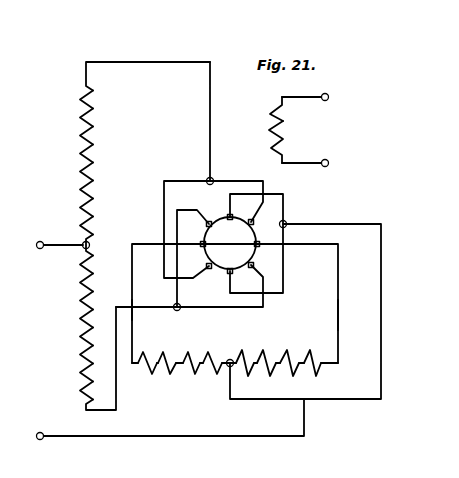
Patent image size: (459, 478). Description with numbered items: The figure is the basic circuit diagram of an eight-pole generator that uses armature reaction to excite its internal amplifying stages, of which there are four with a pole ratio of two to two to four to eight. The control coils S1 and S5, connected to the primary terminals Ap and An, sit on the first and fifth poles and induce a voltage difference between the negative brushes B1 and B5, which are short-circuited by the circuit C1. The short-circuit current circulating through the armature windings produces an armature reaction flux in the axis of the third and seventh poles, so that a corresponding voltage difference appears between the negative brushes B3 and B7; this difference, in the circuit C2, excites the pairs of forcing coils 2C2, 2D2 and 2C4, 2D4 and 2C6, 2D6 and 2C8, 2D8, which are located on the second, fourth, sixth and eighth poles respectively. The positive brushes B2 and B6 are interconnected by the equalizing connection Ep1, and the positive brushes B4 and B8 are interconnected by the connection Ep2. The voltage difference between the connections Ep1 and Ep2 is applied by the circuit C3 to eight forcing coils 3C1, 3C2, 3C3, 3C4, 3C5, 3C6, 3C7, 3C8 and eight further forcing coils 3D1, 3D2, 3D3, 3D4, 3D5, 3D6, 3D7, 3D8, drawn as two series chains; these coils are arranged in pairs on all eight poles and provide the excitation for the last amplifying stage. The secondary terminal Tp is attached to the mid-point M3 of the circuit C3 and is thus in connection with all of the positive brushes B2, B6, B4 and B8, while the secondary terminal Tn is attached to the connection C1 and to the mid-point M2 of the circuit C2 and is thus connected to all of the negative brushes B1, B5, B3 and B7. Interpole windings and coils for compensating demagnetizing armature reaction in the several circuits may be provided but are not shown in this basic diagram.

The forcing coil 3C1 is at (66, 100).
The forcing coil 3C2 is at (66, 118).
The forcing coil 3C3 is at (66, 136).
The forcing coil 3C4 is at (66, 154).
The forcing coil 3C5 is at (66, 172).
The forcing coil 3C6 is at (66, 190).
The forcing coil 3C7 is at (66, 208).
The forcing coil 3C8 is at (66, 226).
The forcing coil 3D1 is at (65, 265).
The forcing coil 3D2 is at (65, 282).
The forcing coil 3D3 is at (65, 300).
The forcing coil 3D4 is at (65, 318).
The forcing coil 3D5 is at (65, 337).
The forcing coil 3D6 is at (65, 355).
The forcing coil 3D7 is at (65, 373).
The forcing coil 3D8 is at (65, 391).
The secondary terminal Tp is at (34, 245).
The secondary terminal Tn is at (34, 436).
The mid-point of circuit C3 M3 is at (98, 244).
The mid-point of circuit C2 M2 is at (231, 352).
The circuit C3 is at (133, 62).
The circuit C1 is at (287, 215).
The circuit C2 is at (340, 307).
The equalizing connection Ep1 is at (179, 180).
The connection Ep2 is at (262, 307).
The negative brush B1 is at (232, 226).
The positive brush B2 is at (249, 211).
The negative brush B3 is at (249, 247).
The positive brush B4 is at (255, 265).
The negative brush B5 is at (232, 264).
The positive brush B6 is at (213, 270).
The negative brush B7 is at (214, 247).
The positive brush B8 is at (206, 225).
The forcing coil 2C2 is at (141, 373).
The forcing coil 2C4 is at (165, 351).
The forcing coil 2C6 is at (189, 373).
The forcing coil 2C8 is at (209, 351).
The forcing coil 2D2 is at (262, 380).
The forcing coil 2D4 is at (274, 371).
The forcing coil 2D6 is at (285, 353).
The forcing coil 2D8 is at (310, 350).
The control coil S1 is at (290, 118).
The control coil S5 is at (290, 138).
The primary terminal Ap is at (329, 97).
The primary terminal An is at (329, 163).